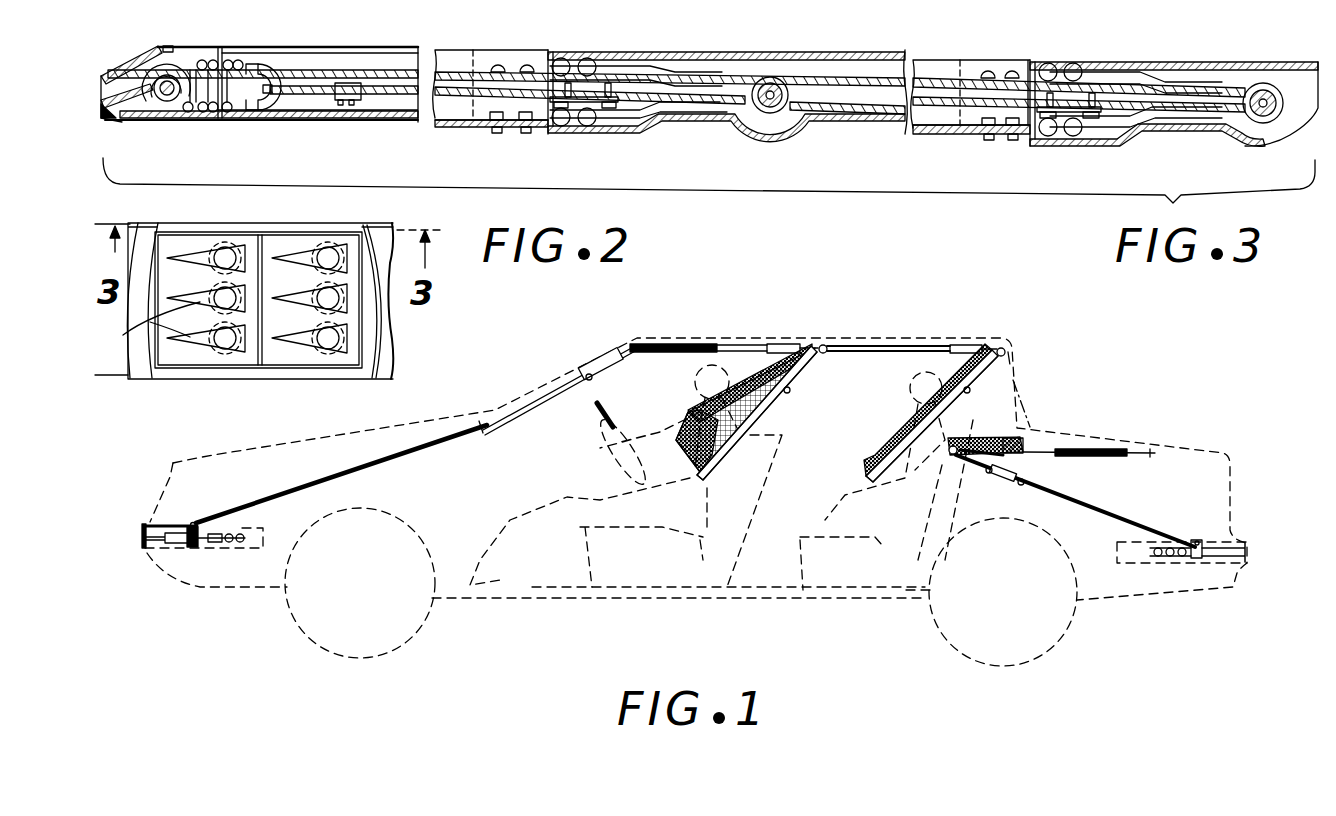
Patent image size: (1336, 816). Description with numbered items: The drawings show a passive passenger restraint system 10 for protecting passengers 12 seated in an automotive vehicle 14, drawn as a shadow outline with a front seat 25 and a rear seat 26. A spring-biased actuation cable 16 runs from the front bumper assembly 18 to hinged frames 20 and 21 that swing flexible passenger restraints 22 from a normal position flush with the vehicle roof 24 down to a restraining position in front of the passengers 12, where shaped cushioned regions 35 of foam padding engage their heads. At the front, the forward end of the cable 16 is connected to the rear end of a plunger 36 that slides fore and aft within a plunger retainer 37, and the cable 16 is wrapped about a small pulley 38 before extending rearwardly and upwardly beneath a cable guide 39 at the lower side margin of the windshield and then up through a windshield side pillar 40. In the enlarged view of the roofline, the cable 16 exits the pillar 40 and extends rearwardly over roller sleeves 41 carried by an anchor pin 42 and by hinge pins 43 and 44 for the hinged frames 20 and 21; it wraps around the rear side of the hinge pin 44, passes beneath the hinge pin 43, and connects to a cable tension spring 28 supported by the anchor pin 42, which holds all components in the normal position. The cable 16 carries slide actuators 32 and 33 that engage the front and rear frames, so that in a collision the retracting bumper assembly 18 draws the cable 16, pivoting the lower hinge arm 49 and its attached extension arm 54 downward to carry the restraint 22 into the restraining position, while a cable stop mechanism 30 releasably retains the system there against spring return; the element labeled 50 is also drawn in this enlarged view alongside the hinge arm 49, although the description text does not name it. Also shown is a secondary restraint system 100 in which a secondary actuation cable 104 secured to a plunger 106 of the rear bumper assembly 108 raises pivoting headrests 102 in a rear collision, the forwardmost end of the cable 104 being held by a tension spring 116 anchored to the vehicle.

In FIG. 2, the passenger restraint system 10 is at (201, 388).
In FIG. 1, the passenger restraint system 10 is at (903, 334).
In FIG. 2, the passengers 12 is at (228, 246).
In FIG. 1, the passengers 12 is at (667, 527).
In FIG. 2, the automotive vehicle 14 is at (385, 222).
In FIG. 1, the automotive vehicle 14 is at (463, 590).
In FIG. 3, the spring-biased actuation cable 16 is at (108, 115).
In FIG. 2, the spring-biased actuation cable 16 is at (120, 224).
In FIG. 1, the spring-biased actuation cable 16 is at (440, 440).
In FIG. 1, the front bumper assembly 18 is at (143, 550).
In FIG. 3, the hinged frame 20 is at (760, 7).
In FIG. 2, the hinged frame 20 is at (184, 383).
In FIG. 1, the hinged frame 20 is at (792, 393).
In FIG. 3, the hinged frame 21 is at (1203, 63).
In FIG. 2, the hinged frame 21 is at (303, 376).
In FIG. 1, the hinged frame 21 is at (1005, 373).
In FIG. 1, the flexible passenger restraints 22 is at (688, 410).
In FIG. 1, the vehicle roof 24 is at (842, 336).
In FIG. 1, the front seat 25 is at (697, 573).
In FIG. 1, the rear seat 26 is at (903, 578).
In FIG. 3, the cable tension spring 28 is at (210, 112).
In FIG. 1, the cable tension spring 28 is at (680, 340).
In FIG. 1, the cable stop mechanism 30 is at (598, 354).
In FIG. 3, the slide actuator 32 is at (575, 90).
In FIG. 3, the slide actuator 33 is at (1062, 100).
In FIG. 2, the cushioned regions 35 is at (147, 319).
In FIG. 1, the plunger 36 is at (232, 543).
In FIG. 1, the plunger retainer 37 is at (173, 527).
In FIG. 1, the small pulley 38 is at (194, 522).
In FIG. 1, the cable guide 39 is at (478, 427).
In FIG. 3, the windshield side pillar 40 is at (115, 74).
In FIG. 1, the windshield side pillar 40 is at (550, 396).
In FIG. 3, the roller sleeves 41 is at (240, 68).
In FIG. 3, the anchor pin 42 is at (169, 80).
In FIG. 3, the hinge pin 43 is at (767, 86).
In FIG. 3, the hinge pin 44 is at (1283, 112).
In FIG. 3, the lower hinge arm 49 is at (655, 130).
In FIG. 3, the housing 50 is at (706, 55).
In FIG. 3, the extension arm 54 is at (362, 125).
In FIG. 1, the extension arm 54 is at (735, 445).
In FIG. 1, the secondary restraint system 100 is at (1070, 438).
In FIG. 1, the pivoting headrests 102 is at (1013, 440).
In FIG. 1, the secondary actuation cable 104 is at (1133, 520).
In FIG. 1, the plunger 106 is at (1177, 557).
In FIG. 1, the rear bumper assembly 108 is at (1280, 513).
In FIG. 1, the tension spring 116 is at (1113, 457).